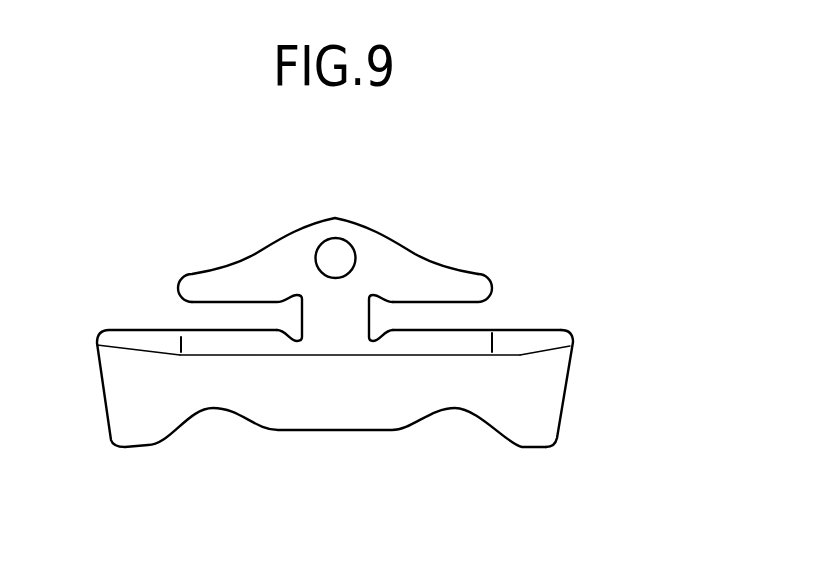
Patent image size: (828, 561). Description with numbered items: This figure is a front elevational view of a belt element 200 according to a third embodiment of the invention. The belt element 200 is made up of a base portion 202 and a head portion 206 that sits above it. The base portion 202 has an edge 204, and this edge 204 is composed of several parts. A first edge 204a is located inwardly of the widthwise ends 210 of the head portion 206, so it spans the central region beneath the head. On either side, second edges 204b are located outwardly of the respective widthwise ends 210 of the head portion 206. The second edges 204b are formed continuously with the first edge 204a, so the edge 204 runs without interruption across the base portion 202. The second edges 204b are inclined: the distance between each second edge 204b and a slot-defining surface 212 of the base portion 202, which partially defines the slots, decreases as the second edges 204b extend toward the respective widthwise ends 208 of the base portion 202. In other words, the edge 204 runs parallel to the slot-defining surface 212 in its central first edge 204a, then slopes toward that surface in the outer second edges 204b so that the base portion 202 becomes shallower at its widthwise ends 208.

The belt element 200 is at (482, 240).
The base portion 202 is at (368, 445).
The edge 204 is at (293, 368).
The first edge 204a is at (247, 357).
The second edges 204b is at (520, 355).
The head portion 206 is at (222, 228).
The widthwise ends of the base portion 208 is at (577, 415).
The widthwise ends of the head portion 210 is at (500, 293).
The slot-defining surface 212 is at (517, 330).